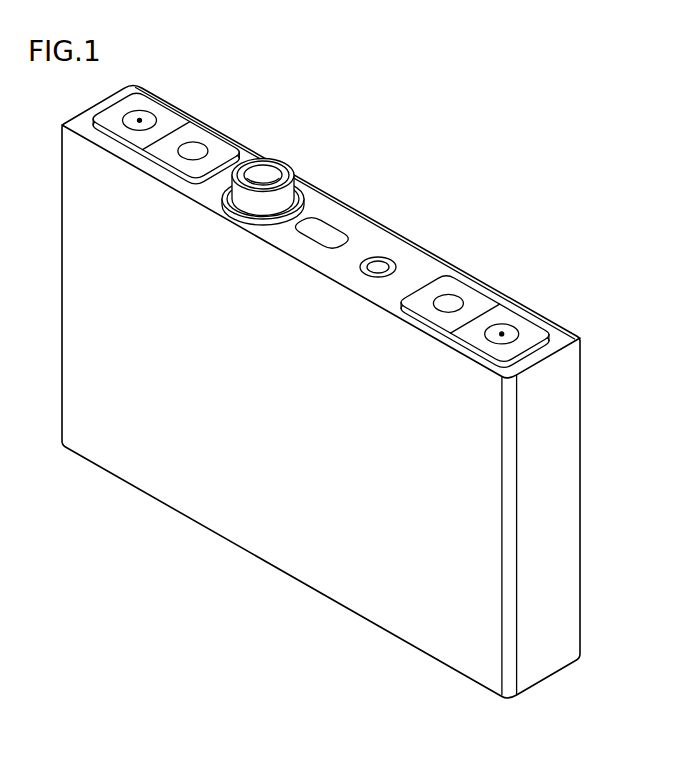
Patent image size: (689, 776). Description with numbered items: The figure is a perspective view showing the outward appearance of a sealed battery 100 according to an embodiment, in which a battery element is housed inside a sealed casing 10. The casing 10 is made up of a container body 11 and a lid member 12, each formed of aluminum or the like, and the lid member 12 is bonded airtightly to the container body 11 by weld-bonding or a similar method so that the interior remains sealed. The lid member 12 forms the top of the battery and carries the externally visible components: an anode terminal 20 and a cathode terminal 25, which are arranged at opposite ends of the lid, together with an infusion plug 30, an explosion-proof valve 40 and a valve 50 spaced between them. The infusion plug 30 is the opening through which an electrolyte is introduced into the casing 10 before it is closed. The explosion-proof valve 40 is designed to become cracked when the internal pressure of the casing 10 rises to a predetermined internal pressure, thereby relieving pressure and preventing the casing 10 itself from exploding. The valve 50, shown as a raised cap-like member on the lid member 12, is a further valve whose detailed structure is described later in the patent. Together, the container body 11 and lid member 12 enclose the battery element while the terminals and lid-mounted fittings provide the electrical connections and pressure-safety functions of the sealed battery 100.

The sealed battery 100 is at (372, 391).
The casing 10 is at (372, 392).
The container body 11 is at (563, 380).
The lid member 12 is at (563, 343).
The anode terminal 20 is at (507, 312).
The cathode terminal 25 is at (173, 122).
The infusion plug 30 is at (380, 267).
The explosion-proof valve 40 is at (323, 233).
The valve 50 is at (280, 162).